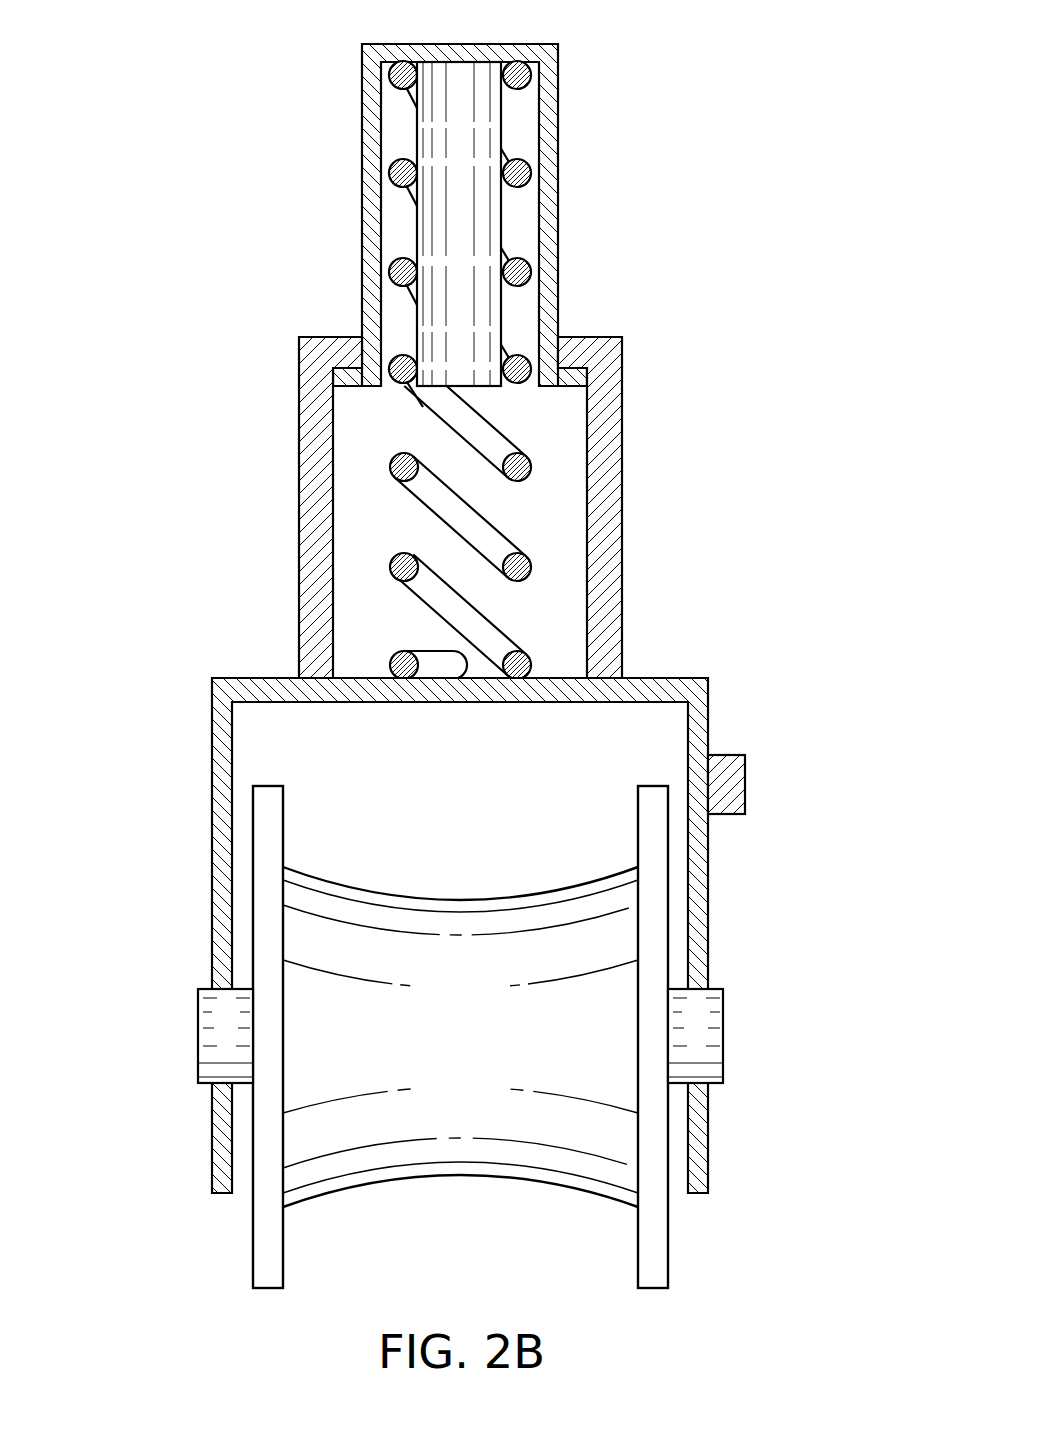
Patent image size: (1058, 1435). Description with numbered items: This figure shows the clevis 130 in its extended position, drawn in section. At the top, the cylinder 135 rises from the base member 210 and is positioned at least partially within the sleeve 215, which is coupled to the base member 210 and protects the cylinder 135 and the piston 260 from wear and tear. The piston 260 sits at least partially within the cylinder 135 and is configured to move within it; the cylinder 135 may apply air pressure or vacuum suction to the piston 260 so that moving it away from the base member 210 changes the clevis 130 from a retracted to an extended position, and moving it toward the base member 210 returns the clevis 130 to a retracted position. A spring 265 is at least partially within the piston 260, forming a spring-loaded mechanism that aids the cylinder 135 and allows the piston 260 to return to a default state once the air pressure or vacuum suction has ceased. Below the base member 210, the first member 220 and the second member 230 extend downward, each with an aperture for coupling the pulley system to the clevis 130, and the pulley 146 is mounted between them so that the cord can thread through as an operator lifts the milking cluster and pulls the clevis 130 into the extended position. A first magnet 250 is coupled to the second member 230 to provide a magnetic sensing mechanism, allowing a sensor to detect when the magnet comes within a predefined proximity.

The clevis 130 is at (771, 99).
The cylinder 135 is at (363, 180).
The pulley 146 is at (600, 1130).
The base member 210 is at (250, 678).
The sleeve 215 is at (622, 497).
The first member 220 is at (213, 853).
The second member 230 is at (708, 933).
The first magnet 250 is at (745, 781).
The piston 260 is at (503, 223).
The spring 265 is at (503, 147).